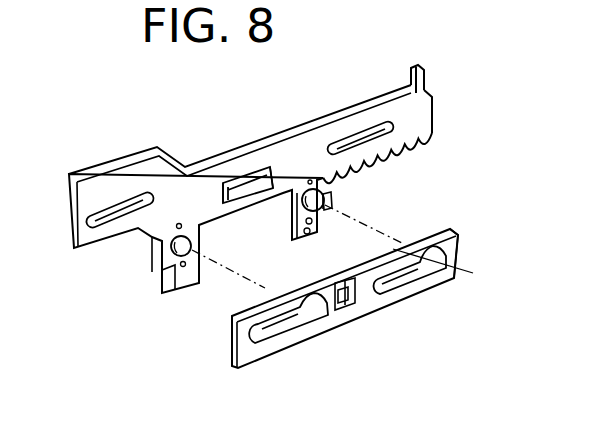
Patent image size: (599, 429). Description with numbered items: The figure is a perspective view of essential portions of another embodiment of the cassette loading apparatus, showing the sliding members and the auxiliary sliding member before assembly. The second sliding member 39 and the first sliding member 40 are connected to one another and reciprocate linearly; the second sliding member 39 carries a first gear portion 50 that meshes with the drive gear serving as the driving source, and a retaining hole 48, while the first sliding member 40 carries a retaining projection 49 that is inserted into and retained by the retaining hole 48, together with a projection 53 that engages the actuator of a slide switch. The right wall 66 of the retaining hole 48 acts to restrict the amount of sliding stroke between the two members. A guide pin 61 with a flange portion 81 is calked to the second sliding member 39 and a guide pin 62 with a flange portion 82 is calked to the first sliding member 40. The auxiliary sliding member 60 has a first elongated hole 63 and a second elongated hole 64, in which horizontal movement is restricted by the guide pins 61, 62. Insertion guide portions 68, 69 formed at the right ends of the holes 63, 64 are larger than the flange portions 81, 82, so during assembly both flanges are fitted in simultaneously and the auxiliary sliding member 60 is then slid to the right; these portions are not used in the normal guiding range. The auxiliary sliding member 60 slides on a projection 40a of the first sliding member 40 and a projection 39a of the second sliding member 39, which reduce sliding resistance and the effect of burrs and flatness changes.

The second sliding member 39 is at (421, 117).
The projection 39a is at (196, 283).
The first sliding member 40 is at (267, 143).
The projection 40a is at (292, 242).
The retaining hole 48 is at (248, 185).
The retaining projection 49 is at (236, 188).
The first gear portion 50 is at (417, 147).
The projection 53 is at (424, 77).
The auxiliary sliding member 60 is at (246, 357).
The guide pin 61 is at (170, 256).
The guide pin 62 is at (331, 193).
The first elongated hole 63 is at (276, 330).
The second elongated hole 64 is at (400, 278).
The right wall 66 is at (280, 188).
The insertion guide portion 68 is at (352, 294).
The insertion guide portion 69 is at (457, 248).
The flange portion 81 is at (165, 275).
The flange portion 82 is at (318, 210).